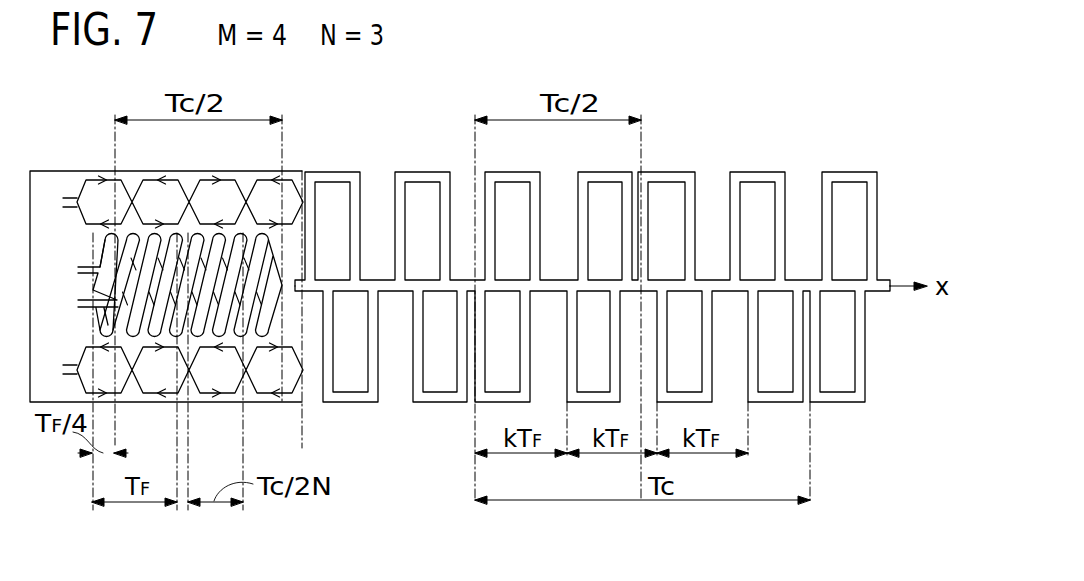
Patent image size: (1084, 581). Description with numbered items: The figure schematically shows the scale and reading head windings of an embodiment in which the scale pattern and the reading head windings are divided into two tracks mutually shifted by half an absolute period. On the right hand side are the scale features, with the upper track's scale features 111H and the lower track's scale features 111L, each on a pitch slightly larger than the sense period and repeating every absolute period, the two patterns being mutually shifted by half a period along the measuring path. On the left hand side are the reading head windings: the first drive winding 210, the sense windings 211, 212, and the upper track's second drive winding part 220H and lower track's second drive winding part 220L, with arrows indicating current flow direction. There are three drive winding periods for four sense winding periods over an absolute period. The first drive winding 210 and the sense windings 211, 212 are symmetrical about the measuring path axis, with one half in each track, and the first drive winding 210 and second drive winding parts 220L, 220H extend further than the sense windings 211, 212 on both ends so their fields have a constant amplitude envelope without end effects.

The first drive winding 210 is at (246, 171).
The upper track's second drive winding part 220H is at (132, 192).
The lower track's second drive winding part 220L is at (85, 350).
The sense winding 211 is at (268, 328).
The sense winding 212 is at (246, 330).
The upper track's scale features 111H is at (819, 225).
The lower track's scale features 111L is at (866, 342).